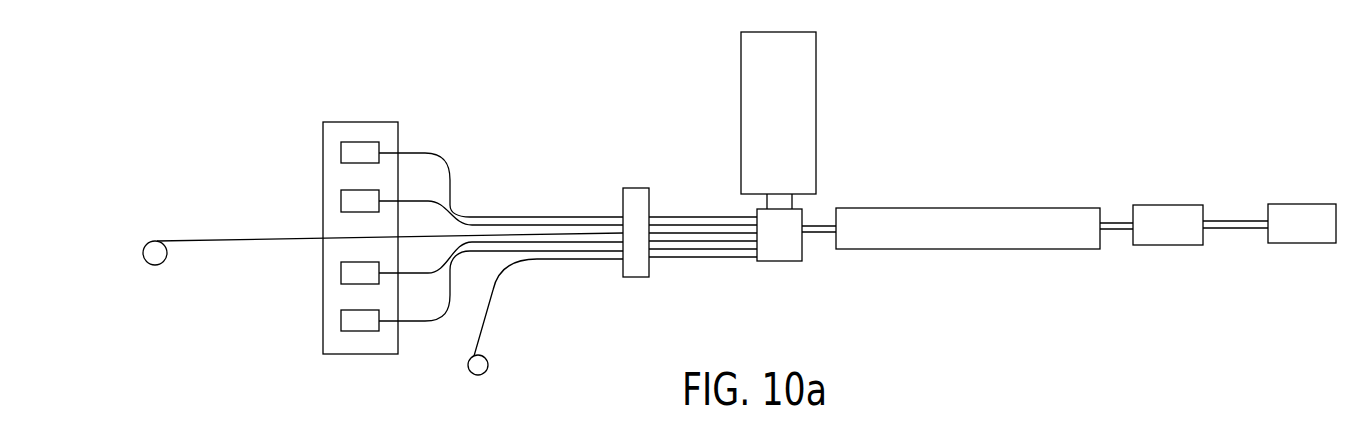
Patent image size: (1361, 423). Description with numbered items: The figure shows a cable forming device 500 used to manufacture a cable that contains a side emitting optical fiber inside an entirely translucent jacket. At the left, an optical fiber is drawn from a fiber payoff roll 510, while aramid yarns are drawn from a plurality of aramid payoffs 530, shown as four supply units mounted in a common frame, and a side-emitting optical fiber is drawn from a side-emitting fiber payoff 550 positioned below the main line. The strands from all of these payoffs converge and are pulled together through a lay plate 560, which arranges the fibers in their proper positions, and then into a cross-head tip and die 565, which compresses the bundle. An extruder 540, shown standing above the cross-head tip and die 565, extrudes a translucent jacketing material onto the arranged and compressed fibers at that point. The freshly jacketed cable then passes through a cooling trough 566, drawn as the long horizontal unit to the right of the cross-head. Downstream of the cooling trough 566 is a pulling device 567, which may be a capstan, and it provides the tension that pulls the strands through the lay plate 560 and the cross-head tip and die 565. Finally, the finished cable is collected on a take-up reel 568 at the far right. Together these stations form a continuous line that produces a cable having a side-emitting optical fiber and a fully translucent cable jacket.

The cable forming device 500 is at (1090, 114).
The fiber payoff roll 510 is at (143, 254).
The aramid payoffs 530 is at (363, 355).
The extruder 540 is at (816, 108).
The side-emitting fiber payoff 550 is at (479, 375).
The lay plate 560 is at (634, 188).
The cross-head tip and die 565 is at (778, 261).
The cooling trough 566 is at (967, 249).
The pulling device 567 is at (1167, 245).
The take-up reel 568 is at (1300, 243).